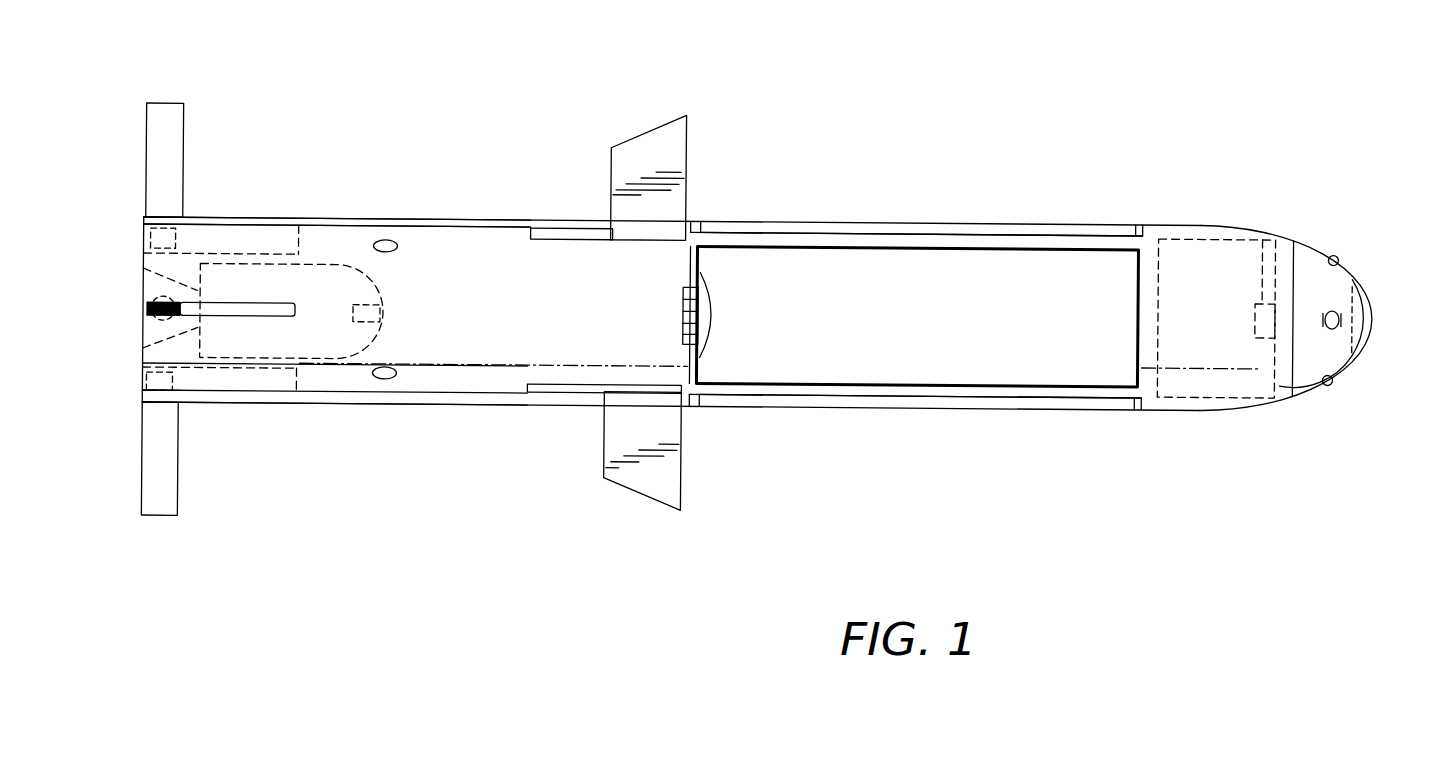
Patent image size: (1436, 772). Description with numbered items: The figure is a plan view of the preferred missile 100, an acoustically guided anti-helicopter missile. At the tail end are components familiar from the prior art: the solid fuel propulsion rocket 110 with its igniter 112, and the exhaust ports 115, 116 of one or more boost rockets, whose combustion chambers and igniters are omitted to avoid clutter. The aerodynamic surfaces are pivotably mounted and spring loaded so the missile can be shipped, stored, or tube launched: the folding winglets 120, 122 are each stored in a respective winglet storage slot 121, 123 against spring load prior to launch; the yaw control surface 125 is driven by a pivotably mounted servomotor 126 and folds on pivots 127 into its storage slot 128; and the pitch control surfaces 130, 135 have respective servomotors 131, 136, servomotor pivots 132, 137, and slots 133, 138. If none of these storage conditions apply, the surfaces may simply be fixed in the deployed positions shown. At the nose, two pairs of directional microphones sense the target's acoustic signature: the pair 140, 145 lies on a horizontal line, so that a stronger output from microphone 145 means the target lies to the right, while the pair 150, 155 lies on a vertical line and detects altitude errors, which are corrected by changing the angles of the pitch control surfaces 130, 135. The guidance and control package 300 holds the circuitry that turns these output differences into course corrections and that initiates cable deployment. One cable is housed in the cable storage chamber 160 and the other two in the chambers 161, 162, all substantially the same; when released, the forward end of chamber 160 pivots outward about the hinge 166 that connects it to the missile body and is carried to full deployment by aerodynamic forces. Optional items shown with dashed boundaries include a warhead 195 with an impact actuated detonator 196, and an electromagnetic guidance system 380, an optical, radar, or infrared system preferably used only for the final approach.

The missile 100 is at (848, 37).
The solid fuel propulsion rocket 110 is at (343, 230).
The igniter 112 is at (357, 318).
The exhaust port 115 is at (400, 244).
The exhaust port 116 is at (386, 379).
The folding winglet 120 is at (641, 139).
The winglet storage slot 121 is at (568, 229).
The folding winglet 122 is at (650, 487).
The winglet storage slot 123 is at (582, 390).
The yaw control surface 125 is at (152, 315).
The release rod 126 is at (142, 299).
The pivots 127 is at (143, 283).
The storage slot 128 is at (289, 298).
The pitch control surface 130 is at (168, 114).
The servomotor 131 is at (142, 215).
The servomotor pivot 132 is at (143, 232).
The slot 133 is at (246, 224).
The pitch control surface 135 is at (162, 512).
The servomotor 136 is at (137, 412).
The servomotor pivot 137 is at (138, 396).
The slot 138 is at (261, 392).
The directional microphone 140 is at (1339, 249).
The directional microphone 145 is at (1330, 374).
The directional microphone 150 is at (1350, 271).
The directional microphone 155 is at (1358, 340).
The cable storage chamber 160 is at (960, 254).
The cable storage chamber 161 is at (1092, 225).
The cable storage chamber 162 is at (967, 396).
The hinge 166 is at (701, 305).
The warhead 195 is at (1228, 203).
The impact actuated detonator 196 is at (1262, 268).
The guidance and control package 300 is at (1307, 246).
The electromagnetic guidance system 380 is at (1363, 312).